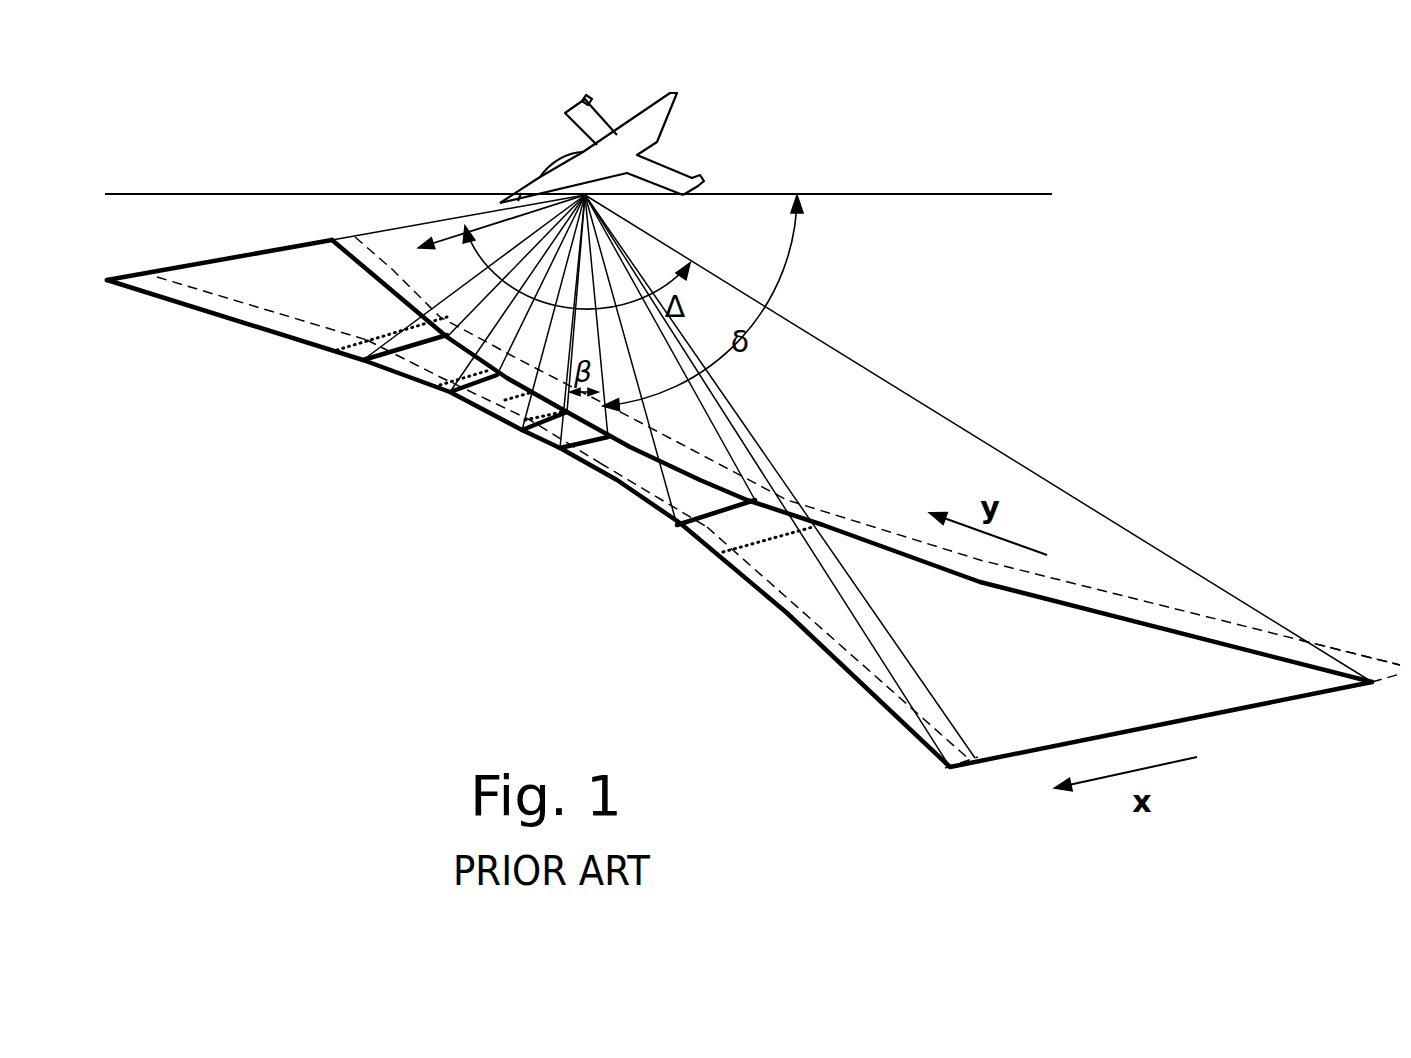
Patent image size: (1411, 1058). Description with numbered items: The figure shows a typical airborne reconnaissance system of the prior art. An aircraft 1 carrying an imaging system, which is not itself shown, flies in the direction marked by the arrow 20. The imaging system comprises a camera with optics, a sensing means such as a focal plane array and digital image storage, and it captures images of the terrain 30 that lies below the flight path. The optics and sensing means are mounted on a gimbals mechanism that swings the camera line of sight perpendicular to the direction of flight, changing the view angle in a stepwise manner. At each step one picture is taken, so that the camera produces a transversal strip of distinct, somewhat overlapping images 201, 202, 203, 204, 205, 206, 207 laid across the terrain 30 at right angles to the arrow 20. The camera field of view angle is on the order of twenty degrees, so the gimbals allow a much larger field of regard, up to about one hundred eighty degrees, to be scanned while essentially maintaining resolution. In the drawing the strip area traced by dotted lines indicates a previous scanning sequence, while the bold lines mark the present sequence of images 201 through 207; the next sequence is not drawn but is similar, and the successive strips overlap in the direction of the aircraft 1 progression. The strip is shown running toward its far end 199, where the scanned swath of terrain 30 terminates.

The aircraft 1 is at (647, 123).
The arrow 20 is at (877, 430).
The terrain 30 is at (247, 258).
The end of ground strip 199 is at (1368, 660).
The image 201 is at (242, 313).
The image 202 is at (410, 367).
The image 203 is at (475, 397).
The image 204 is at (510, 412).
The image 205 is at (547, 433).
The image 206 is at (623, 473).
The image 207 is at (772, 582).